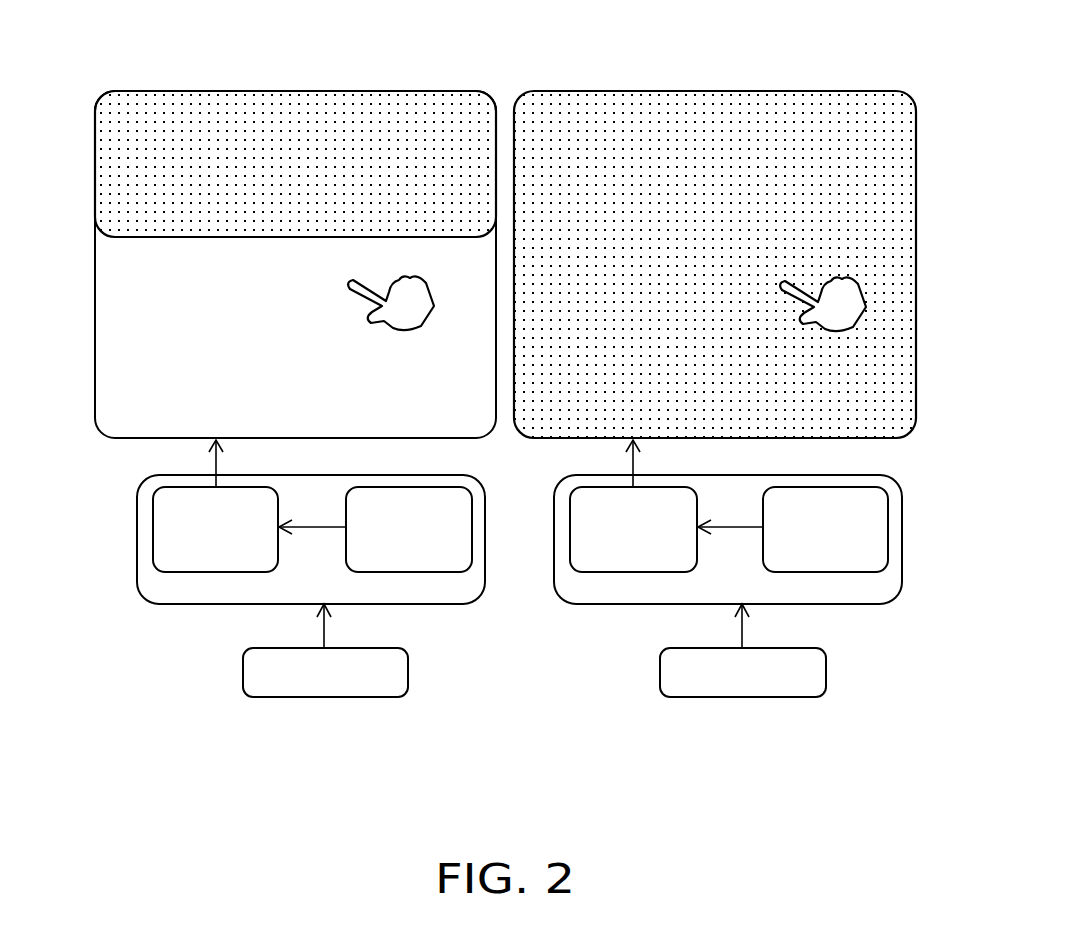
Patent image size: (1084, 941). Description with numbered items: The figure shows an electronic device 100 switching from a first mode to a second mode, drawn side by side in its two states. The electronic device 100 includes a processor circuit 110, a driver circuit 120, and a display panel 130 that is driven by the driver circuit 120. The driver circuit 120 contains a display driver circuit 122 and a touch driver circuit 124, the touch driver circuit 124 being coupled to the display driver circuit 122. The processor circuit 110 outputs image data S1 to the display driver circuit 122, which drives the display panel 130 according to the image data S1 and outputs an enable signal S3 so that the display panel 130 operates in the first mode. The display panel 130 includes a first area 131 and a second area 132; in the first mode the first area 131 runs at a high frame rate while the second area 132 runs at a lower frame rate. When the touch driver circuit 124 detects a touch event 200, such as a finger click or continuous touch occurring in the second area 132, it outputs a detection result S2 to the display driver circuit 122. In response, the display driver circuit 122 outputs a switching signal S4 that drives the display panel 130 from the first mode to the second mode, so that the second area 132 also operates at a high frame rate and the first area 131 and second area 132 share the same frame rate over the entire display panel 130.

The electronic device 100 is at (182, 728).
The processor circuit 110 is at (410, 670).
The driver circuit 120 is at (136, 542).
The display driver circuit 122 is at (152, 513).
The touch driver circuit 124 is at (472, 532).
The display panel 130 is at (295, 90).
The first area 131 is at (113, 172).
The second area 132 is at (113, 324).
The touch event 200 is at (376, 322).
The image data S1 is at (318, 639).
The detection result S2 is at (316, 528).
The enable signal S3 is at (216, 465).
The switching signal S4 is at (634, 464).